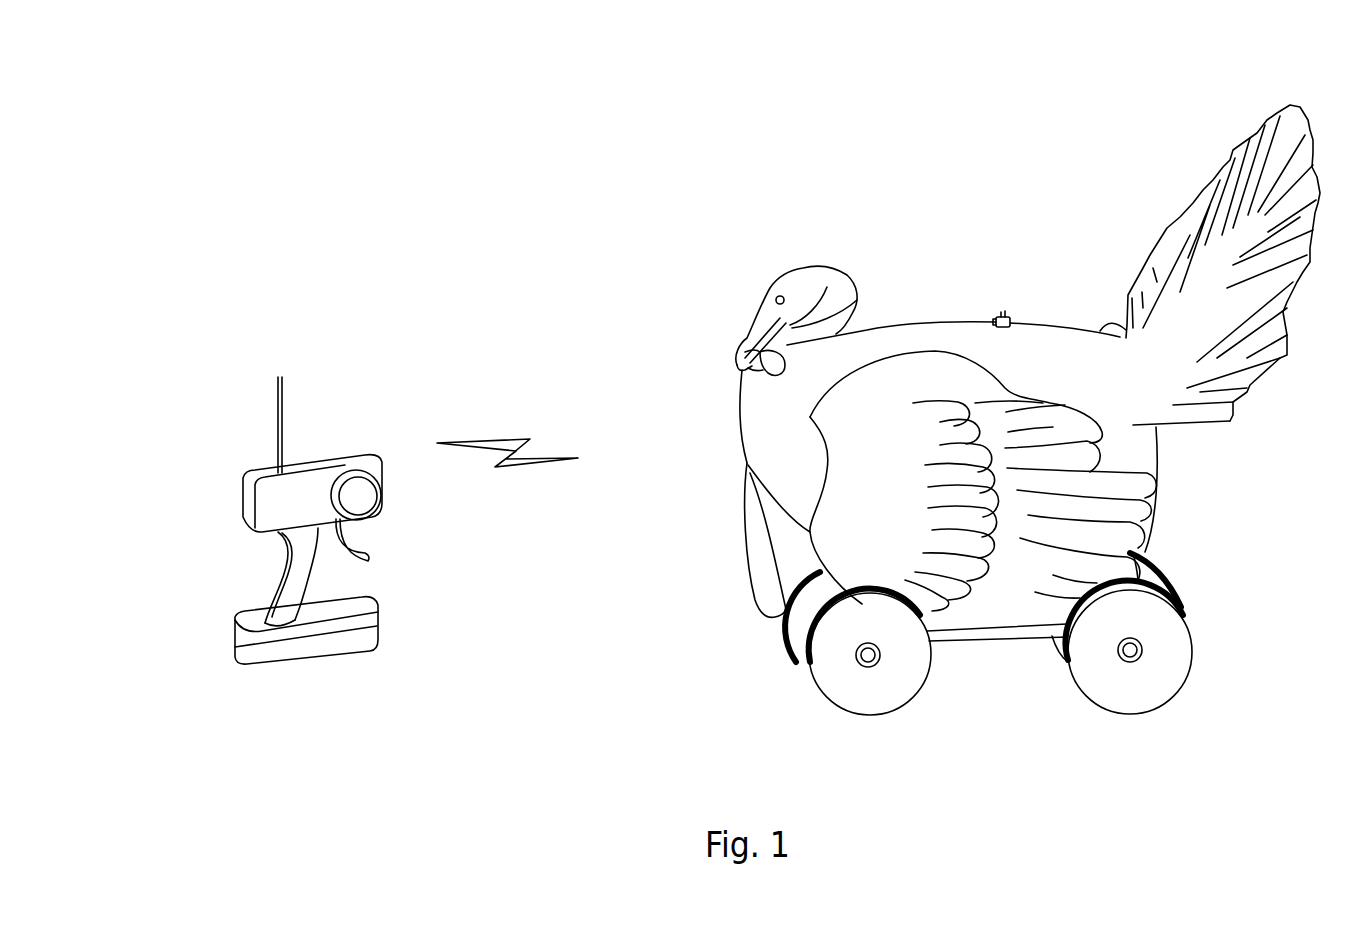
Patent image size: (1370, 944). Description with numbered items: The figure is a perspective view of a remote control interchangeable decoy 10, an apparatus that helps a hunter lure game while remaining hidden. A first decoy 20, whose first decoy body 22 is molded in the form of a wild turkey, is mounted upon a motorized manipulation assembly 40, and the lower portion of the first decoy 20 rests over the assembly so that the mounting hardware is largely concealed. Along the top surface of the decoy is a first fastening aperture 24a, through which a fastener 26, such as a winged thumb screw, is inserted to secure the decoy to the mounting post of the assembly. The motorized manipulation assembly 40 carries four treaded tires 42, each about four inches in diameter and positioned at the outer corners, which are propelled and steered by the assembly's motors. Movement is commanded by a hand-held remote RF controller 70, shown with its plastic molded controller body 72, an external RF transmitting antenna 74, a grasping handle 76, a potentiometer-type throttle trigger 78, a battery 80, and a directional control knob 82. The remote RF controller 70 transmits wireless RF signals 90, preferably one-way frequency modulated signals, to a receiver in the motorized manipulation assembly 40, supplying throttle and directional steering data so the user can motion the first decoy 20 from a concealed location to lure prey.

The remote control interchangeable decoy 10 is at (268, 133).
The first decoy 20 is at (1191, 494).
The first decoy body 22 is at (778, 276).
The first fastening aperture 24a is at (1013, 327).
The fastener 26 is at (1003, 310).
The motorized manipulation assembly 40 is at (919, 712).
The treaded tires 42 is at (813, 683).
The remote RF controller 70 is at (244, 675).
The controller body 72 is at (258, 507).
The RF transmitting antenna 74 is at (283, 405).
The grasping handle 76 is at (258, 625).
The throttle trigger 78 is at (370, 557).
The battery 80 is at (350, 645).
The directional control knob 82 is at (362, 498).
The RF signals 90 is at (510, 438).